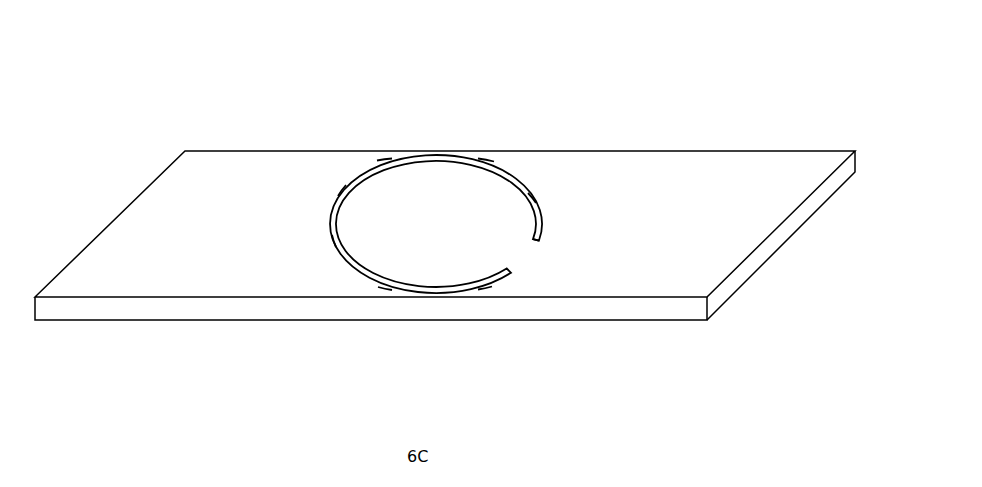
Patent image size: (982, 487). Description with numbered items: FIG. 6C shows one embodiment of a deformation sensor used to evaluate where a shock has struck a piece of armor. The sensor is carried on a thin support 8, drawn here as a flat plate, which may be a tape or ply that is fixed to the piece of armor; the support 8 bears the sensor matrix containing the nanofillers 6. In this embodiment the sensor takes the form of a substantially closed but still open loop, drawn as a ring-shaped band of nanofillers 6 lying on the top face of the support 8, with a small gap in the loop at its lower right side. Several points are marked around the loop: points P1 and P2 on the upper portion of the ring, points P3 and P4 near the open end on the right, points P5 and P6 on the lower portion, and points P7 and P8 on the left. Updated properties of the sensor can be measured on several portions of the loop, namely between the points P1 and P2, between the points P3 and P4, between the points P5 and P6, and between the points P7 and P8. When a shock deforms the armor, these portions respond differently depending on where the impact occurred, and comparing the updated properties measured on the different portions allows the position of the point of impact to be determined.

The nanofillers 6 is at (520, 167).
The thin support 8 is at (580, 137).
The point P1 is at (383, 165).
The point P2 is at (487, 166).
The point P3 is at (533, 197).
The point P4 is at (540, 237).
The point P5 is at (485, 283).
The point P6 is at (385, 285).
The point P7 is at (333, 243).
The point P8 is at (342, 190).